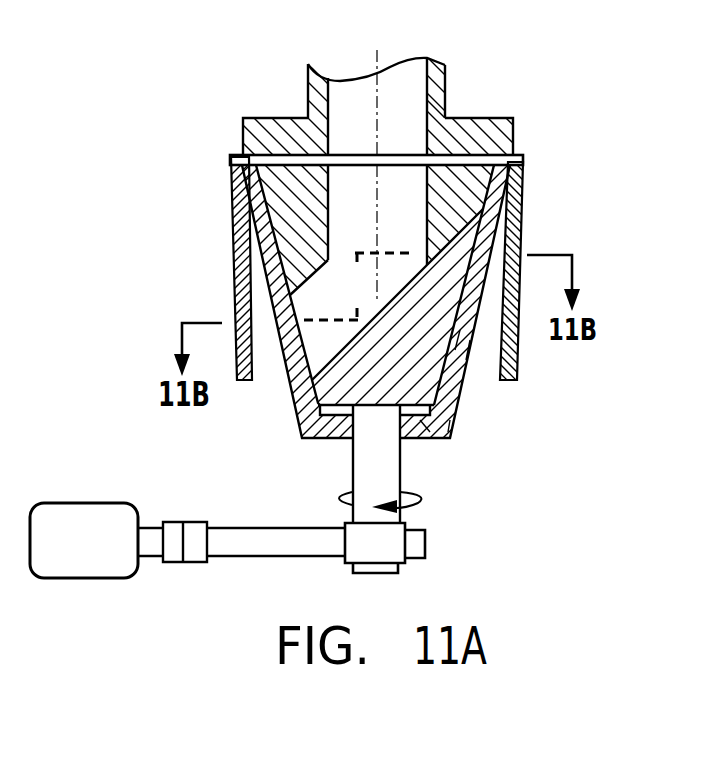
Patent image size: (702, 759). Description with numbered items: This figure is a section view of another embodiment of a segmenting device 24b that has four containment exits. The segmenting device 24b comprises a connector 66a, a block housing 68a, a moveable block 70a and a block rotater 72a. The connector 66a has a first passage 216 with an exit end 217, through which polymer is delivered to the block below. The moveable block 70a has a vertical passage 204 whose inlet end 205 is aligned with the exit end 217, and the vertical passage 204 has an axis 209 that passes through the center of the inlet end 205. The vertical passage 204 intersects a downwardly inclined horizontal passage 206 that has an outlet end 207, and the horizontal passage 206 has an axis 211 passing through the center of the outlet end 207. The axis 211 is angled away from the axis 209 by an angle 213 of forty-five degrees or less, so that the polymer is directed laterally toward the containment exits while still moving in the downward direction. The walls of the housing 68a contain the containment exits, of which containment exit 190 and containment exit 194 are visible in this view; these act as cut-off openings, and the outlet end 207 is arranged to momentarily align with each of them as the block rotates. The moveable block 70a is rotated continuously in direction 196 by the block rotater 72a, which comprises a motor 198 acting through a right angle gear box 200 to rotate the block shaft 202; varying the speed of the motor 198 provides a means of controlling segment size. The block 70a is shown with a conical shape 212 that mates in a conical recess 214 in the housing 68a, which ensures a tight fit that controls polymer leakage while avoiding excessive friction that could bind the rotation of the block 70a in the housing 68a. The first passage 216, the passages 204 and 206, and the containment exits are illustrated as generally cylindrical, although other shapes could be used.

The segmenting device 24b is at (345, 48).
The exit end 217 is at (400, 153).
The inlet end 205 is at (348, 152).
The conical recess 214 is at (282, 153).
The connector 66a is at (447, 76).
The first passage 216 is at (438, 117).
The axis 209 is at (377, 192).
The vertical passage 204 is at (487, 185).
The angle 213 is at (350, 287).
The axis 211 is at (372, 302).
The outlet end 207 is at (327, 314).
The containment exit 190 is at (293, 362).
The conical shape 212 is at (516, 372).
The containment exit 194 is at (466, 338).
The horizontal passage 206 is at (467, 353).
The block housing 68a is at (452, 430).
The moveable block 70a is at (425, 430).
The block shaft 202 is at (353, 463).
The direction 196 is at (414, 503).
The right angle gear box 200 is at (408, 563).
The block rotater 72a is at (233, 514).
The motor 198 is at (104, 503).